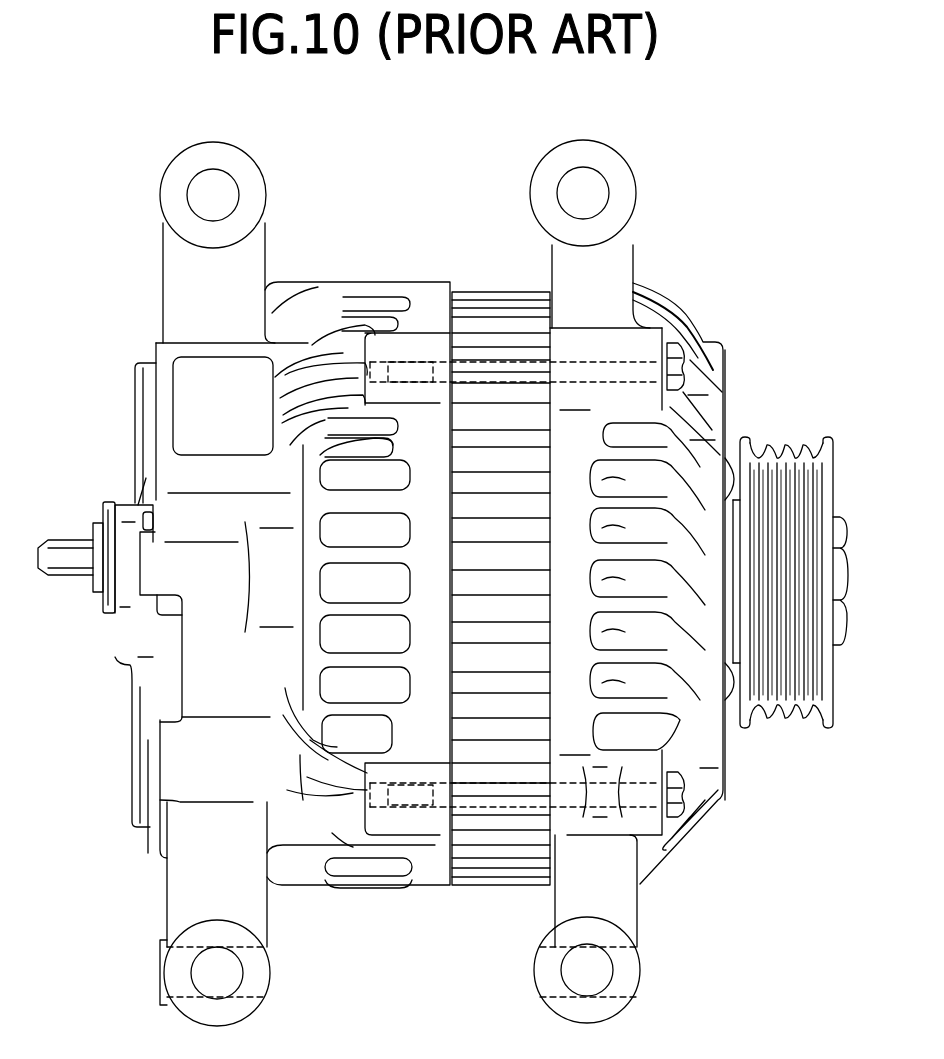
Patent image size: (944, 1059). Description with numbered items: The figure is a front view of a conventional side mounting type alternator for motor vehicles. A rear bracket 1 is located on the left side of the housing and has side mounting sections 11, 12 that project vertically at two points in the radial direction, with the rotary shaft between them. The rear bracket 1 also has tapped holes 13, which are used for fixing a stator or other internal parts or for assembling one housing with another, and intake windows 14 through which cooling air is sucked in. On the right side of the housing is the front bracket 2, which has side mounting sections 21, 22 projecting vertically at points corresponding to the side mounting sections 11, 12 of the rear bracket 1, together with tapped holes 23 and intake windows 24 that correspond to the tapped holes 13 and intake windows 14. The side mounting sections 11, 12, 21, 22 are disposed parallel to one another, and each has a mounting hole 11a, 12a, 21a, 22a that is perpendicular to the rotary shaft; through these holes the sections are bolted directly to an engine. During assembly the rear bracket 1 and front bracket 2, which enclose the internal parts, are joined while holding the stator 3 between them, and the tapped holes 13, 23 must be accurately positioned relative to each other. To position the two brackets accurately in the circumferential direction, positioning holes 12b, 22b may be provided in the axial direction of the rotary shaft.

The rear bracket 1 is at (135, 385).
The front bracket 2 is at (725, 362).
The stator 3 is at (497, 315).
The side mounting section 11 is at (180, 272).
The mounting hole 11a is at (197, 200).
The side mounting section 12 is at (190, 890).
The mounting hole 12a is at (200, 988).
The positioning hole 12b is at (270, 975).
The tapped hole 13 is at (415, 360).
The intake window 14 is at (347, 440).
The side mounting section 21 is at (622, 248).
The mounting hole 21a is at (600, 192).
The side mounting section 22 is at (620, 912).
The mounting hole 22a is at (605, 988).
The positioning hole 22b is at (565, 978).
The tapped hole 23 is at (642, 345).
The intake window 24 is at (650, 722).